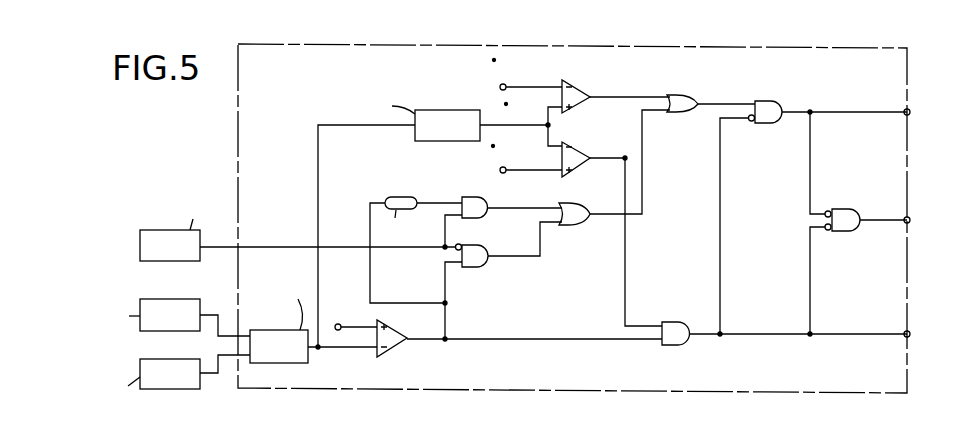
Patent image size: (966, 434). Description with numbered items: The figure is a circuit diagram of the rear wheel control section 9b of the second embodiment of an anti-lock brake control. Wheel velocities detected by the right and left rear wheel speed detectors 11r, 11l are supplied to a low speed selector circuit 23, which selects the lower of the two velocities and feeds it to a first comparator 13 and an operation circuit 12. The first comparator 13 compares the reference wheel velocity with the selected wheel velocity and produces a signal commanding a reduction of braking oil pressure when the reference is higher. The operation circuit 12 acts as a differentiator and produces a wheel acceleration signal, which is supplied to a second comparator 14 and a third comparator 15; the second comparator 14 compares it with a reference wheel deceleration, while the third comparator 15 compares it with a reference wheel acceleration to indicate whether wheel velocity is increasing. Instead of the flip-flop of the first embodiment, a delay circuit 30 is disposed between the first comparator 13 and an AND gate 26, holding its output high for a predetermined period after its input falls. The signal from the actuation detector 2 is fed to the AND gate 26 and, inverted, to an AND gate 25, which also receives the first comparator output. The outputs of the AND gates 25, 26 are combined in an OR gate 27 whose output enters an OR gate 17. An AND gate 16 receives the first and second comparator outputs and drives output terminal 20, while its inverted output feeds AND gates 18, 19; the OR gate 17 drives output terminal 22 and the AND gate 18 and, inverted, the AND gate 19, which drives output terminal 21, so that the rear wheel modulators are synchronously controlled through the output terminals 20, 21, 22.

The rear wheel control section 9b is at (692, 46).
The actuation detector 2 is at (140, 247).
The right rear wheel speed detector 11r is at (165, 299).
The left rear wheel speed detector 11l is at (165, 389).
The low speed selector circuit 23 is at (279, 333).
The first comparator 13 is at (388, 358).
The operation circuit 12 is at (445, 113).
The third comparator 15 is at (577, 85).
The second comparator 14 is at (577, 139).
The delay circuit 30 is at (398, 197).
The AND gate 26 is at (472, 197).
The AND gate 25 is at (473, 270).
The OR gate 27 is at (572, 228).
The OR gate 17 is at (676, 95).
The AND gate 18 is at (767, 101).
The AND gate 19 is at (843, 209).
The AND gate 16 is at (672, 322).
The output terminal 22 is at (910, 112).
The output terminal 21 is at (910, 220).
The output terminal 20 is at (910, 334).